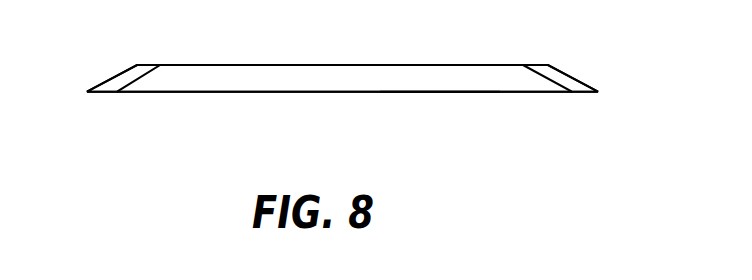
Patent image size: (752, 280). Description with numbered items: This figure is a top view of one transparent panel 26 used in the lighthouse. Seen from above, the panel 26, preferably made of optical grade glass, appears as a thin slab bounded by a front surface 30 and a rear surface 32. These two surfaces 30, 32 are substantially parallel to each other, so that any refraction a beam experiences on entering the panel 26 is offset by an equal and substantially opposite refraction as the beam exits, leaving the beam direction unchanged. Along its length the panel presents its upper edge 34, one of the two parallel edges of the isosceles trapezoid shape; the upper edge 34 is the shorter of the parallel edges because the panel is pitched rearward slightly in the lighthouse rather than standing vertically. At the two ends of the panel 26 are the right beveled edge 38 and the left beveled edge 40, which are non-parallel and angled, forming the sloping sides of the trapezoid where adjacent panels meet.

The transparent panel 26 is at (453, 77).
The front surface 30 is at (275, 92).
The rear surface 32 is at (298, 65).
The upper edge 34 is at (427, 92).
The right beveled edge 38 is at (558, 75).
The left beveled edge 40 is at (124, 72).